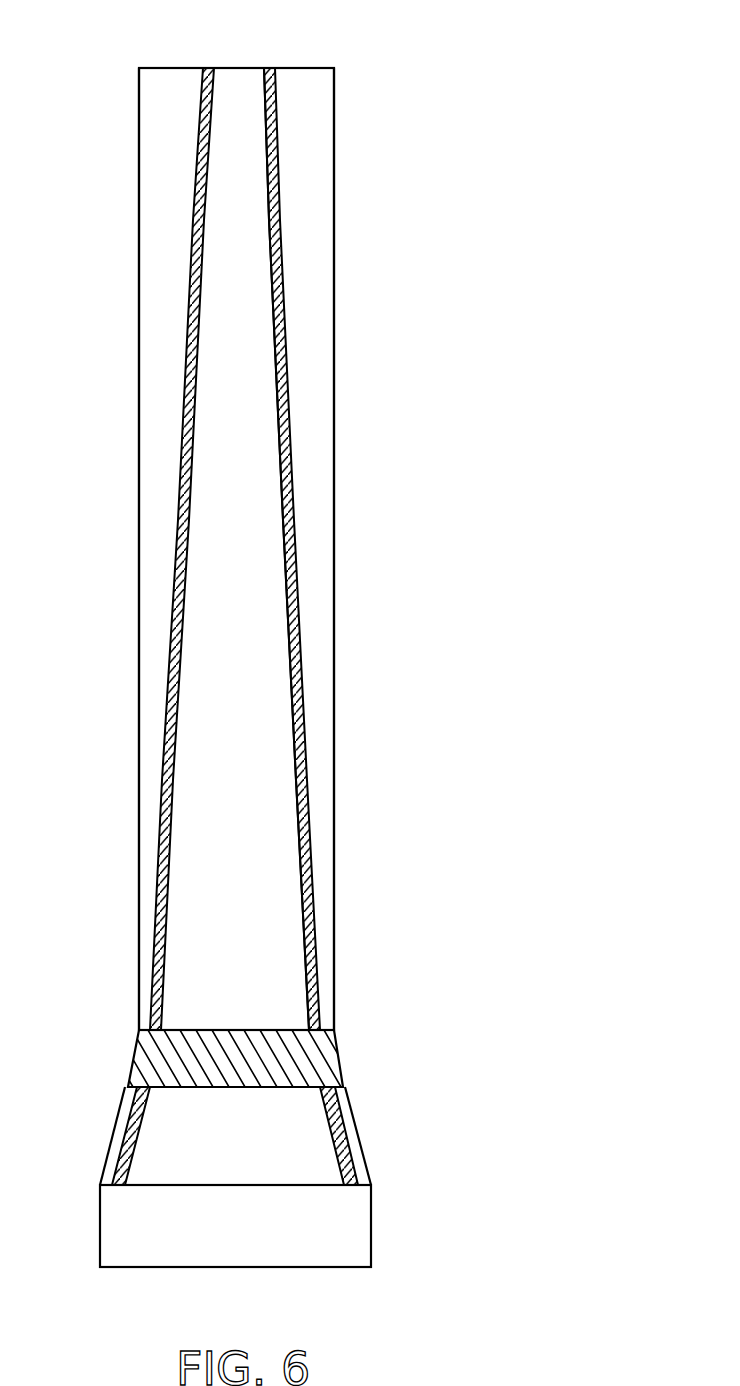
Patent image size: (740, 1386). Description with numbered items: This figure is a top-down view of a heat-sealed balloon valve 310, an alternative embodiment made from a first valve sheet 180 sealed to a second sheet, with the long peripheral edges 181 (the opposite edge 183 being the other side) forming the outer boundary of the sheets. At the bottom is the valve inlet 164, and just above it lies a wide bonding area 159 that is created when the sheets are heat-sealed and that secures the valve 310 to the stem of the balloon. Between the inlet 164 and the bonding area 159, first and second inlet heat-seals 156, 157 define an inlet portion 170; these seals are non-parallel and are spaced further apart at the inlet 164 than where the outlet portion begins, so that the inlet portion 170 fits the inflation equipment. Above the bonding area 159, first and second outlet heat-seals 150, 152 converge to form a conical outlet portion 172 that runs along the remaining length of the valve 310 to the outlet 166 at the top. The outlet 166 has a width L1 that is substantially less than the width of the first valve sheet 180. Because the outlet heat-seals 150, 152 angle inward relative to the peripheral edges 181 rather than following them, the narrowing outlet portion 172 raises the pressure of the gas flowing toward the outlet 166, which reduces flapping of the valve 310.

The valve 310 is at (430, 324).
The first valve sheet 180 is at (334, 160).
The outlet 166 is at (238, 68).
The first housing wall 183 is at (138, 442).
The peripheral edges 181 is at (334, 442).
The second outlet heat-seal 152 is at (182, 557).
The first outlet heat-seal 150 is at (293, 558).
The outlet portion 172 is at (278, 732).
The outlet width L1 is at (300, 153).
The bonding area 159 is at (345, 1065).
The second inlet heat-seal 157 is at (137, 1117).
The first inlet heat-seal 156 is at (340, 1118).
The inlet portion 170 is at (325, 1157).
The valve inlet 164 is at (235, 1267).